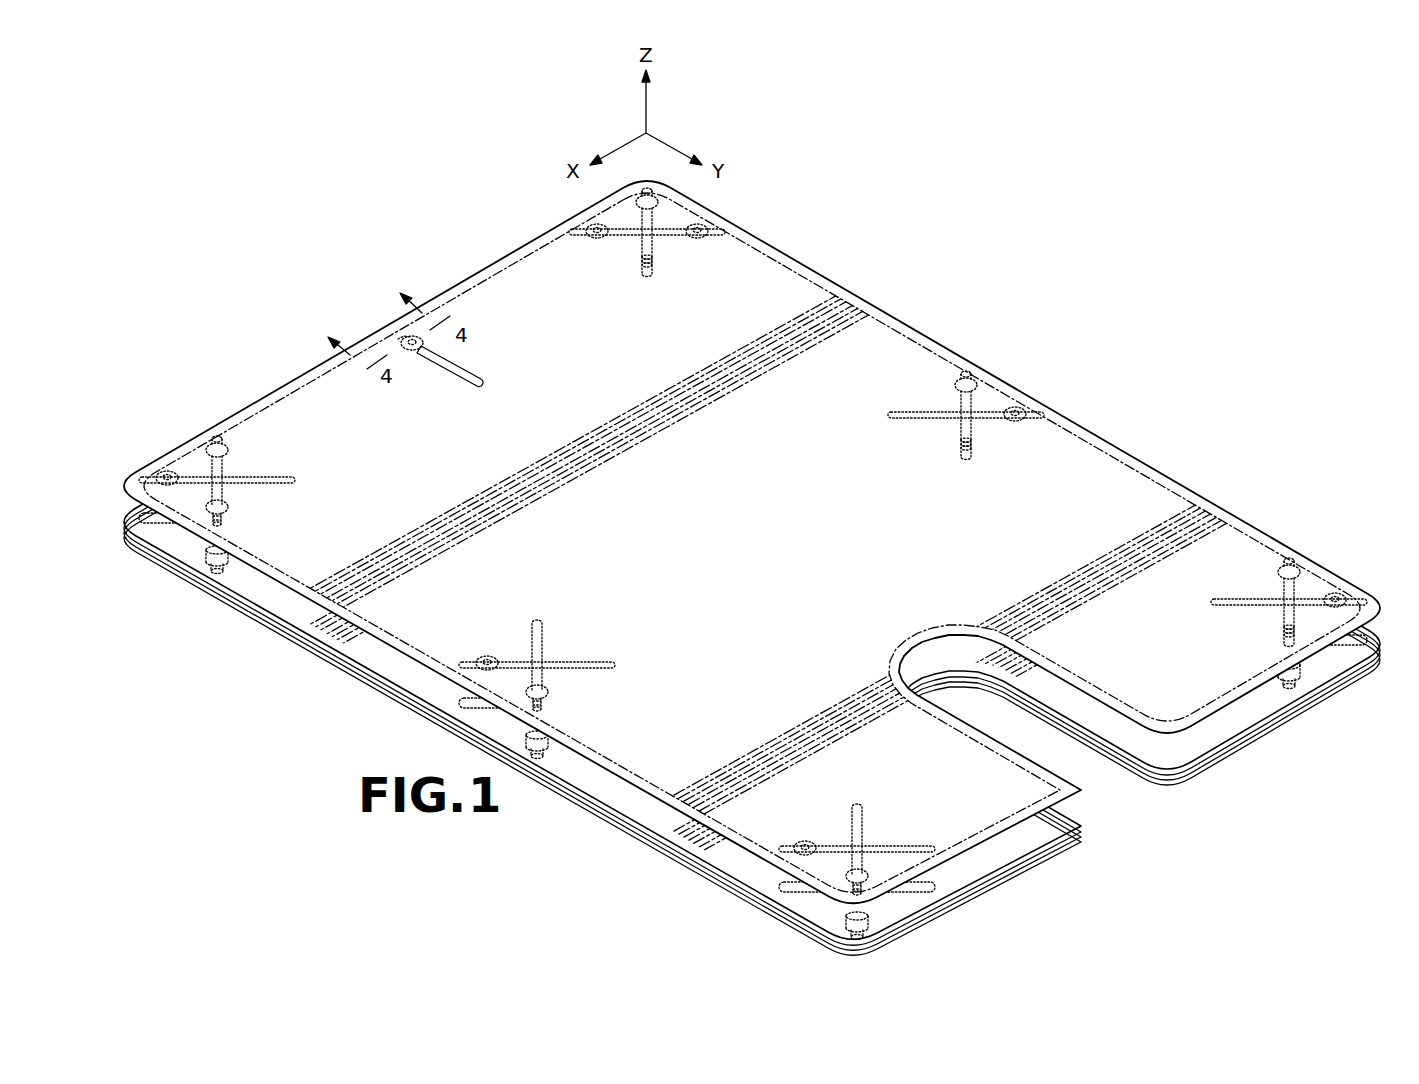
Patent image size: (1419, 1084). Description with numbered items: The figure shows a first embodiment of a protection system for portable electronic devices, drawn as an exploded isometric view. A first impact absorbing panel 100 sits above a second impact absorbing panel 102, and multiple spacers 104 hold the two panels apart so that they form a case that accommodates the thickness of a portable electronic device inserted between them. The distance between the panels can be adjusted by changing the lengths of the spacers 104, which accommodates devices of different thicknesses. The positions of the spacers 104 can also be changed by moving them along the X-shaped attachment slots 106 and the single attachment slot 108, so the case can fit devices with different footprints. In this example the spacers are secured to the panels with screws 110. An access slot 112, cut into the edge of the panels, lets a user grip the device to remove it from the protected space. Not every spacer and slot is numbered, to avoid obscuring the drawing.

The first impact absorbing panel 100 is at (1094, 434).
The second impact absorbing panel 102 is at (1256, 731).
The spacer 104 is at (803, 897).
The X-shaped attachment slot 106 is at (863, 826).
The single attachment slot 108 is at (470, 373).
The screw 110 is at (806, 841).
The access slot 112 is at (1109, 787).